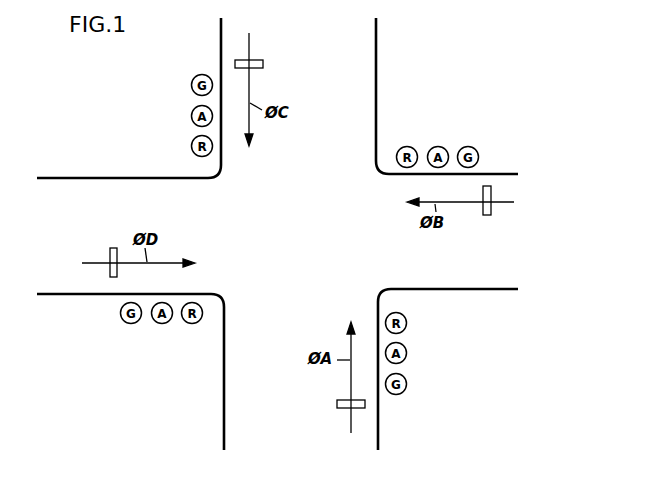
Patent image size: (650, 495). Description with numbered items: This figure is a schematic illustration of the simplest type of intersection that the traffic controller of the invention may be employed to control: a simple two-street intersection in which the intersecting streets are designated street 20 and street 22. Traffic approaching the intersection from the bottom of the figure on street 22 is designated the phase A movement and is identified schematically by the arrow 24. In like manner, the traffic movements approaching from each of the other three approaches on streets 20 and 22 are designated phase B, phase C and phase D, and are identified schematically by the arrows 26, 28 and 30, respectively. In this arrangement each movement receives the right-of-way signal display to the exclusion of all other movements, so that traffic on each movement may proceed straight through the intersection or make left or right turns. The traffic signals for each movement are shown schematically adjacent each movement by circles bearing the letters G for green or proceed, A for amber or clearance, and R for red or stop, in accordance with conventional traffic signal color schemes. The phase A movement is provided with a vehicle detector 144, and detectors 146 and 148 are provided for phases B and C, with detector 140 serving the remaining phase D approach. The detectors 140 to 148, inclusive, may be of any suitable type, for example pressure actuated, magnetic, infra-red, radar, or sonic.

The street 20 is at (438, 265).
The street 22 is at (332, 82).
The arrow 24 is at (350, 385).
The arrow 26 is at (463, 204).
The arrow 28 is at (252, 78).
The arrow 30 is at (168, 262).
The vehicle detector 140 is at (110, 252).
The vehicle detector 144 is at (337, 410).
The vehicle detector 146 is at (492, 208).
The vehicle detector 148 is at (258, 58).